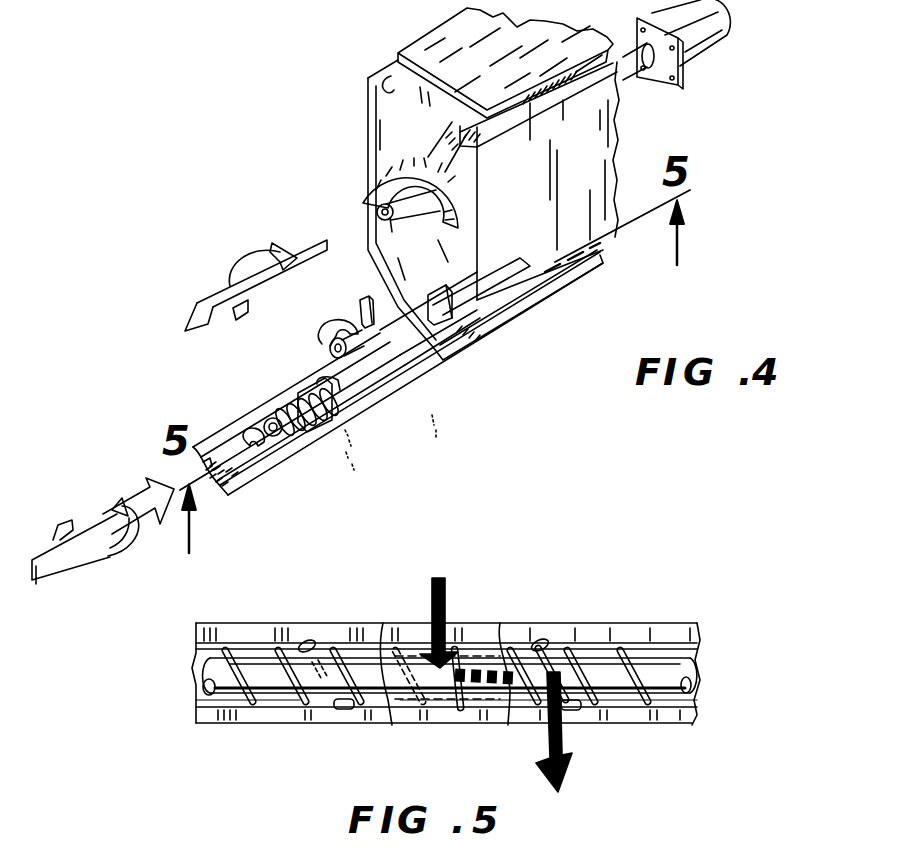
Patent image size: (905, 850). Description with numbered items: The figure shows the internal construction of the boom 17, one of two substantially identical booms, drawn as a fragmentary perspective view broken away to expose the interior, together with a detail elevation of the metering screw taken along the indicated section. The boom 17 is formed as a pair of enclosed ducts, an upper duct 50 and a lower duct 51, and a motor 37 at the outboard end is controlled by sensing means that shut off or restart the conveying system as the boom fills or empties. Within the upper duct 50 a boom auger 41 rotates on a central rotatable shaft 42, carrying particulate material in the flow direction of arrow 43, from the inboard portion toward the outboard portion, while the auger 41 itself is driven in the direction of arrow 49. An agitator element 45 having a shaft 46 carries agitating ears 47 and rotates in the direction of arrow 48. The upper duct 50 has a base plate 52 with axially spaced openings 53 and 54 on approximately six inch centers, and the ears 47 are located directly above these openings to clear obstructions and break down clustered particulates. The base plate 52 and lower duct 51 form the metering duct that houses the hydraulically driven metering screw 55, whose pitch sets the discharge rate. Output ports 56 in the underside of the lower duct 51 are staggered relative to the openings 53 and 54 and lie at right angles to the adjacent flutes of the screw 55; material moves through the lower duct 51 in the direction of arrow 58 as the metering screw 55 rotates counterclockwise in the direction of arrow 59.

In FIG. 4, the boom 17 is at (418, 48).
In FIG. 4, the motor 37 is at (700, 62).
In FIG. 4, the upper duct 50 is at (612, 116).
In FIG. 4, the boom auger 41 is at (418, 158).
In FIG. 4, the central rotatable shaft 42 is at (388, 222).
In FIG. 4, the shaft 46 is at (462, 276).
In FIG. 4, the arrow 49 is at (262, 255).
In FIG. 4, the arrow 43 is at (196, 304).
In FIG. 4, the agitating ears 47 is at (366, 298).
In FIG. 4, the agitator element 45 is at (358, 322).
In FIG. 4, the arrow 48 is at (322, 332).
In FIG. 4, the opening 53 is at (432, 345).
In FIG. 4, the base plate 52 is at (378, 376).
In FIG. 5, the base plate 52 is at (435, 718).
In FIG. 4, the opening 54 is at (348, 412).
In FIG. 5, the opening 54 is at (422, 650).
In FIG. 4, the metering screw 55 is at (284, 436).
In FIG. 5, the metering screw 55 is at (652, 656).
In FIG. 4, the output port 56 is at (248, 434).
In FIG. 5, the output port 56 is at (308, 642).
In FIG. 4, the lower duct 51 is at (215, 480).
In FIG. 5, the lower duct 51 is at (693, 636).
In FIG. 4, the arrow 58 is at (100, 520).
In FIG. 5, the arrow 58 is at (452, 615).
In FIG. 4, the arrow 59 is at (110, 554).